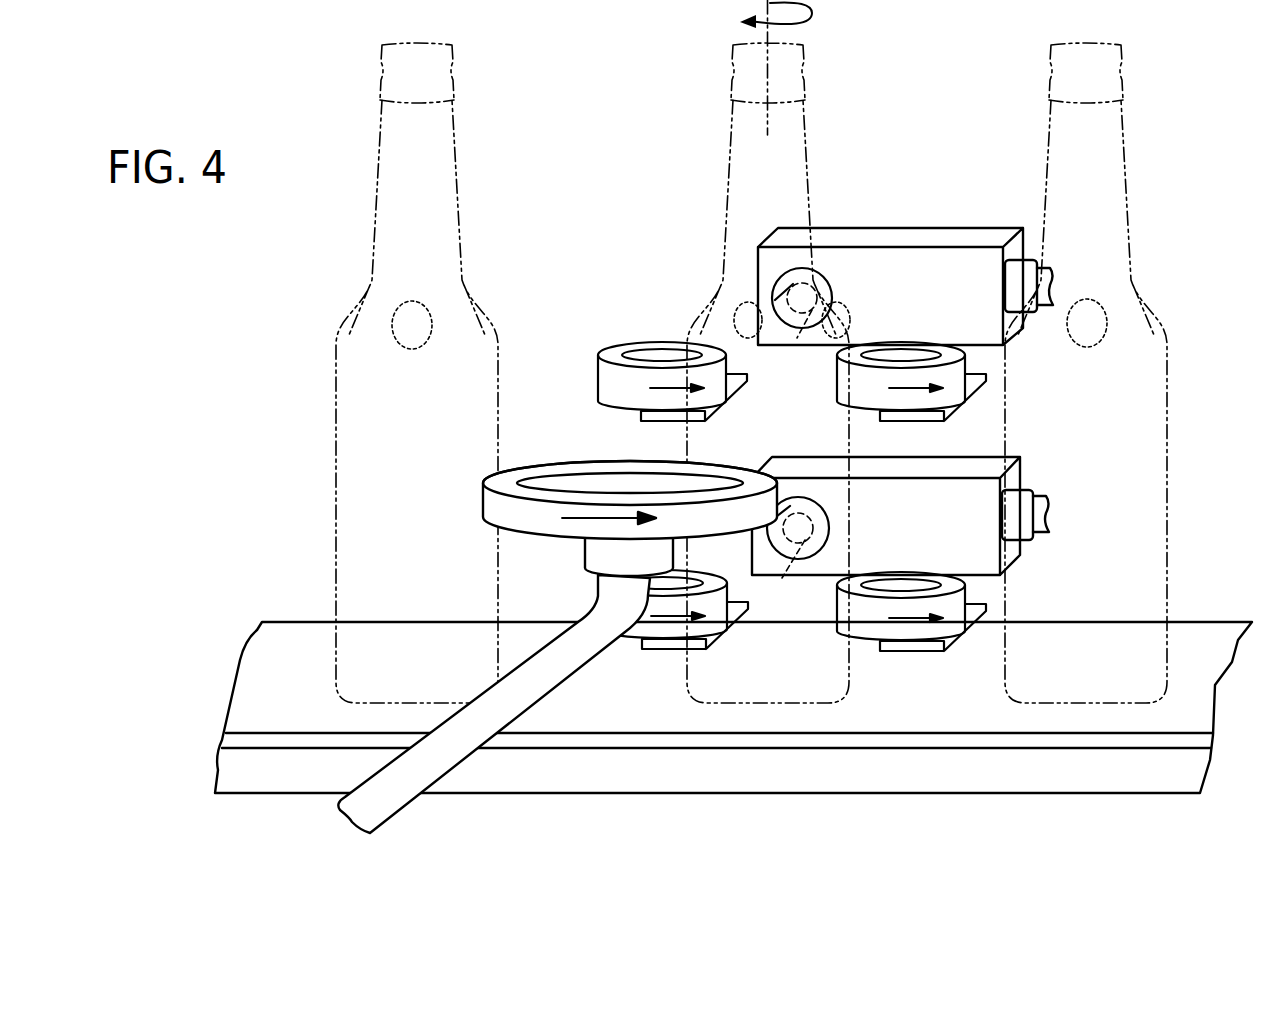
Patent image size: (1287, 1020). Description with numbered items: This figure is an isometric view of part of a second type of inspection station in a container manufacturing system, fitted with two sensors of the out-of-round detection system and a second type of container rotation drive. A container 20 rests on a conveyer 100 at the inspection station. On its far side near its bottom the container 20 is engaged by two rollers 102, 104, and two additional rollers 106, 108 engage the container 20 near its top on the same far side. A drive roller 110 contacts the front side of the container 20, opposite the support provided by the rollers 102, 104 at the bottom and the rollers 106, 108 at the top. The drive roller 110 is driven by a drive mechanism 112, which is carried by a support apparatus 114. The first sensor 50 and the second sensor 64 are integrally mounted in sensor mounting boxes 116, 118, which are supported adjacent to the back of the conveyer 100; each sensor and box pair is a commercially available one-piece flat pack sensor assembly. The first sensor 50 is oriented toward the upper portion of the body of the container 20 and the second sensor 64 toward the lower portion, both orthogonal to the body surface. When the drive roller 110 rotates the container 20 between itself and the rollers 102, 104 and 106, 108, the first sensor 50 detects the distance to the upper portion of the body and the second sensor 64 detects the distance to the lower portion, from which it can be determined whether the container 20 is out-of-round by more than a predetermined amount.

The container 20 is at (795, 133).
The first sensor 50 is at (824, 303).
The second sensor 64 is at (825, 535).
The conveyer 100 is at (1185, 633).
The roller 102 is at (662, 632).
The roller 104 is at (906, 630).
The roller 106 is at (615, 350).
The roller 108 is at (985, 390).
The drive roller 110 is at (572, 468).
The drive mechanism 112 is at (587, 553).
The support apparatus 114 is at (385, 802).
The sensor mounting box 116 is at (935, 265).
The sensor mounting box 118 is at (973, 555).